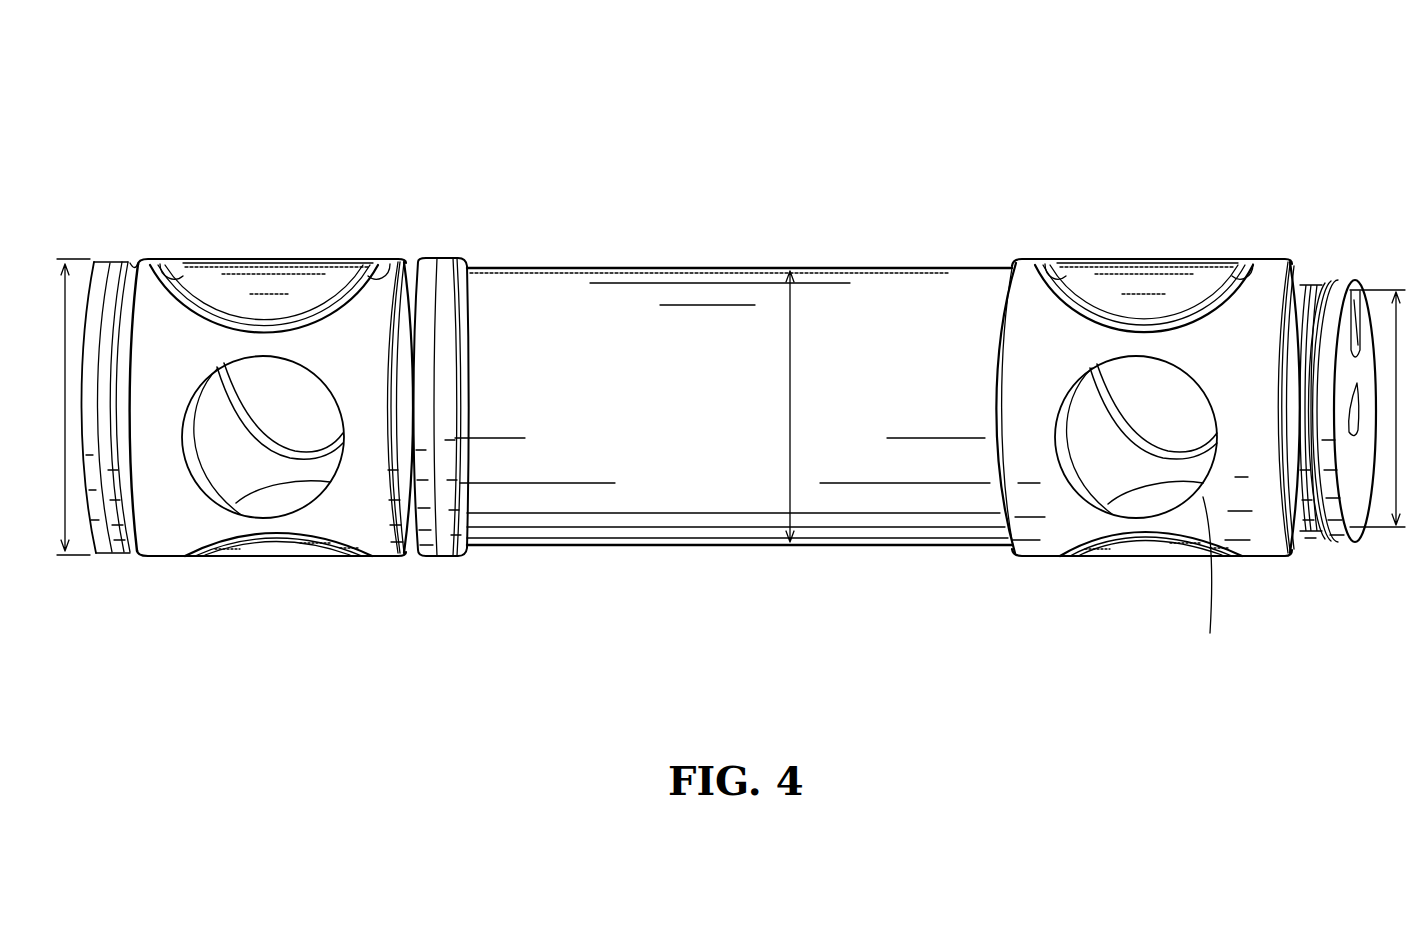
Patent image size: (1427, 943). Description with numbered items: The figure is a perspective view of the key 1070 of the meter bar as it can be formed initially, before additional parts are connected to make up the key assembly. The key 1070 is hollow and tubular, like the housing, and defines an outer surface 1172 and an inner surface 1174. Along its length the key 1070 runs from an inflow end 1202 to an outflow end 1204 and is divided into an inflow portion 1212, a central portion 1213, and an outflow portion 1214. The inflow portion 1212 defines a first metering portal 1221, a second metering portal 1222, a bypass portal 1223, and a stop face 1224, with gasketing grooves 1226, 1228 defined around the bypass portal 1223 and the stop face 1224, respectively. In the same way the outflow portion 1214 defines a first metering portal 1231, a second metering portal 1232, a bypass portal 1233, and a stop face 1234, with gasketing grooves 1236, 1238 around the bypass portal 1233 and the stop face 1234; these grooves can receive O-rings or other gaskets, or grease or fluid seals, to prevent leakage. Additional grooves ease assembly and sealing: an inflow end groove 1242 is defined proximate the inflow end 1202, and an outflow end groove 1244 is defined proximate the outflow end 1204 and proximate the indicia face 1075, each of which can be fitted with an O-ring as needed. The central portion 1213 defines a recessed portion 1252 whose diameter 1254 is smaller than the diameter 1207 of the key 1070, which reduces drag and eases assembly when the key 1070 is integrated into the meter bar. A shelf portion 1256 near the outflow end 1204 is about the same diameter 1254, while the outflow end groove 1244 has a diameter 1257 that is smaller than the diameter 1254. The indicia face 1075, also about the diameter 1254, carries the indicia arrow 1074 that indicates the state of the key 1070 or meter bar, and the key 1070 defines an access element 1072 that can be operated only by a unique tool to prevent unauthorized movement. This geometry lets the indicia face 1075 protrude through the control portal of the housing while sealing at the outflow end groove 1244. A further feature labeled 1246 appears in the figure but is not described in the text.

The key 1070 is at (553, 149).
The access element 1072 is at (1380, 290).
The indicia arrow 1074 is at (1355, 282).
The indicia face 1075 is at (1348, 543).
The outer surface 1172 is at (642, 421).
The inner surface 1174 is at (1073, 433).
The inflow end 1202 is at (168, 182).
The outflow end 1204 is at (1277, 140).
The diameter 1207 is at (60, 470).
The inflow portion 1212 is at (329, 163).
The central portion 1213 is at (751, 212).
The outflow portion 1214 is at (1123, 210).
The first metering portal 1221 is at (195, 480).
The second metering portal 1222 is at (243, 437).
The bypass portal 1223 is at (223, 556).
The stop face 1224 is at (323, 258).
The gasketing groove 1226 is at (362, 556).
The gasketing groove 1228 is at (382, 258).
The first metering portal 1231 is at (1214, 580).
The second metering portal 1232 is at (1112, 425).
The bypass portal 1233 is at (1163, 493).
The stop face 1234 is at (1168, 276).
The gasketing groove 1236 is at (1092, 556).
The gasketing groove 1238 is at (1040, 272).
The inflow end groove 1242 is at (140, 262).
The outflow end groove 1244 is at (1322, 282).
The collar 1246 is at (413, 553).
The recessed portion 1252 is at (875, 268).
The diameter 1254 is at (790, 400).
The shelf portion 1256 is at (1308, 555).
The diameter 1257 is at (1392, 497).